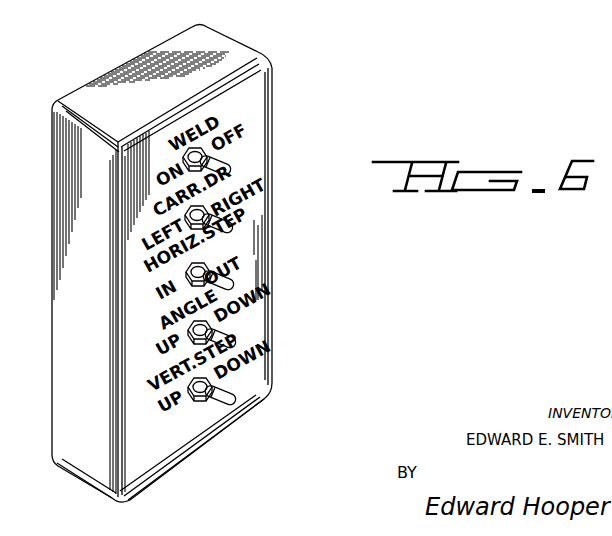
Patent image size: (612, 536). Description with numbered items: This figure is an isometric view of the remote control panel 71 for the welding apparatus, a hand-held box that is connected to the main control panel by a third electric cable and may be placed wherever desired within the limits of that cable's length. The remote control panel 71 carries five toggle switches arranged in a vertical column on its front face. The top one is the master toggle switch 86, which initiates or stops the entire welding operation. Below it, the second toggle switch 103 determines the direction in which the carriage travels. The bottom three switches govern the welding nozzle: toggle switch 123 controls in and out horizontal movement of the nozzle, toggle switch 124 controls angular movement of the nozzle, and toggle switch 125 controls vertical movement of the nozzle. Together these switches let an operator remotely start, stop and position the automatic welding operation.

The remote control panel 71 is at (261, 50).
The master toggle switch 86 is at (205, 137).
The carriage direction toggle switch 103 is at (206, 190).
The horizontal movement toggle switch 123 is at (214, 264).
The angular movement toggle switch 124 is at (216, 322).
The vertical movement toggle switch 125 is at (220, 381).